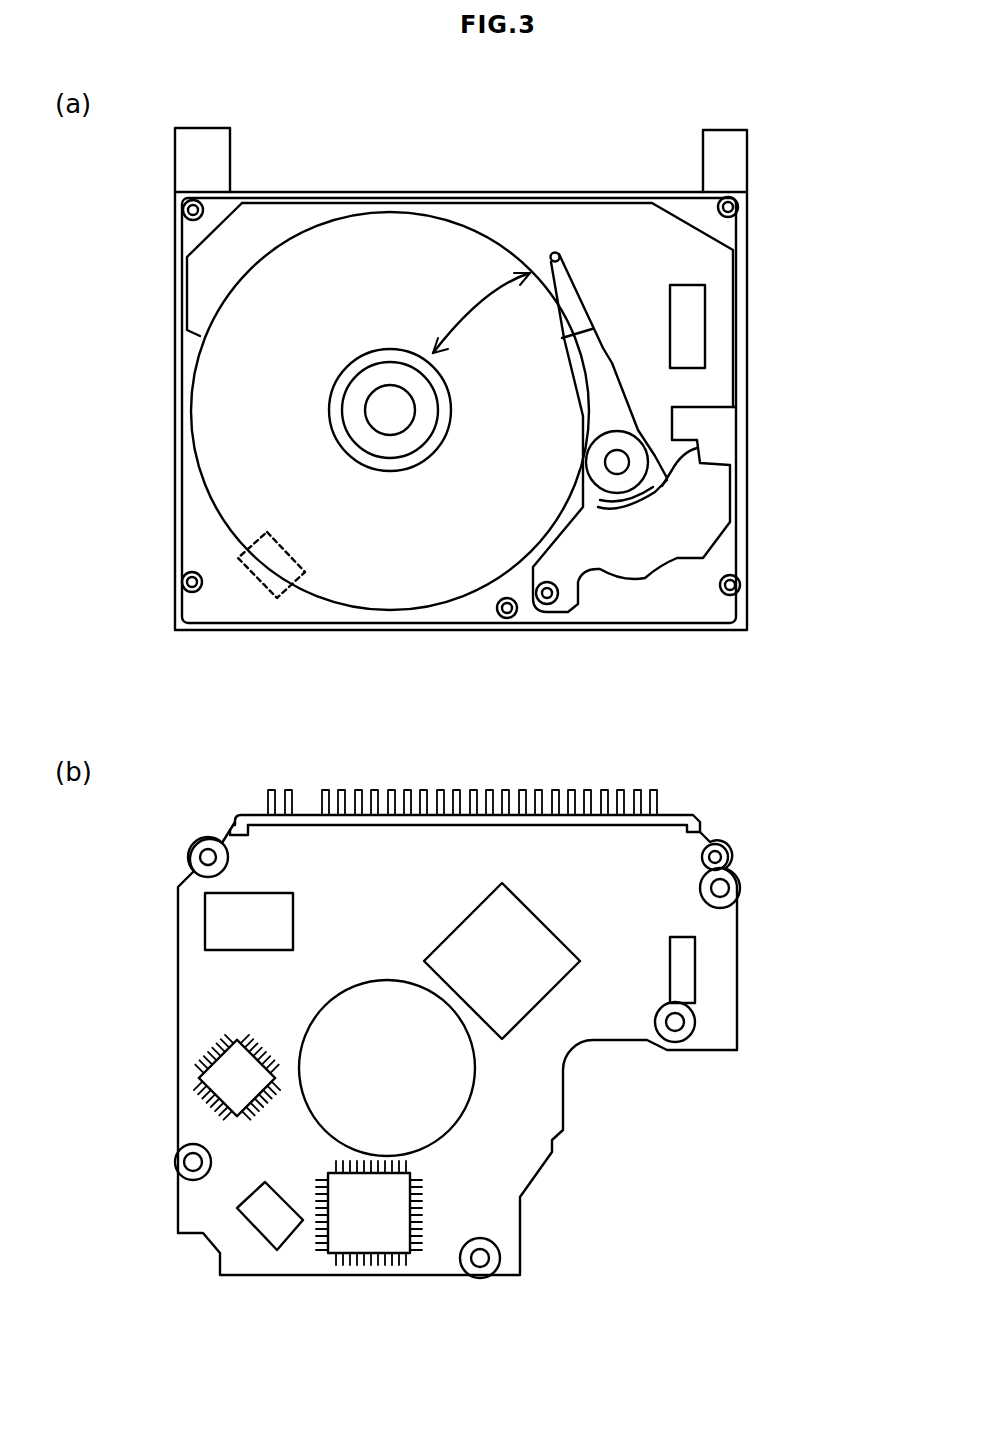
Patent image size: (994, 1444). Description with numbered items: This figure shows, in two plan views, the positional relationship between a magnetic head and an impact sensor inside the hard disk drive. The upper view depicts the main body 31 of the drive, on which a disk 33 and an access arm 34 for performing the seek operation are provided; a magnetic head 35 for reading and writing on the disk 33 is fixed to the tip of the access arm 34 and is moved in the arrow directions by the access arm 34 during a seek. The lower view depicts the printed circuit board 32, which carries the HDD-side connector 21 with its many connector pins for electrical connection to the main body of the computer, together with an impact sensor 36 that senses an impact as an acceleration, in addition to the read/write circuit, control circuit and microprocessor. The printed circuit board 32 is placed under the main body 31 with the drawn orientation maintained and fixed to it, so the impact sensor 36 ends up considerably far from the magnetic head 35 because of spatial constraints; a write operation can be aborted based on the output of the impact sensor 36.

The HDD-side connector 21 is at (673, 813).
The main body 31 is at (748, 325).
The printed circuit board 32 is at (563, 1130).
The disk 33 is at (490, 236).
The access arm 34 is at (600, 352).
The magnetic head 35 is at (556, 252).
The impact sensor 36 is at (245, 565).